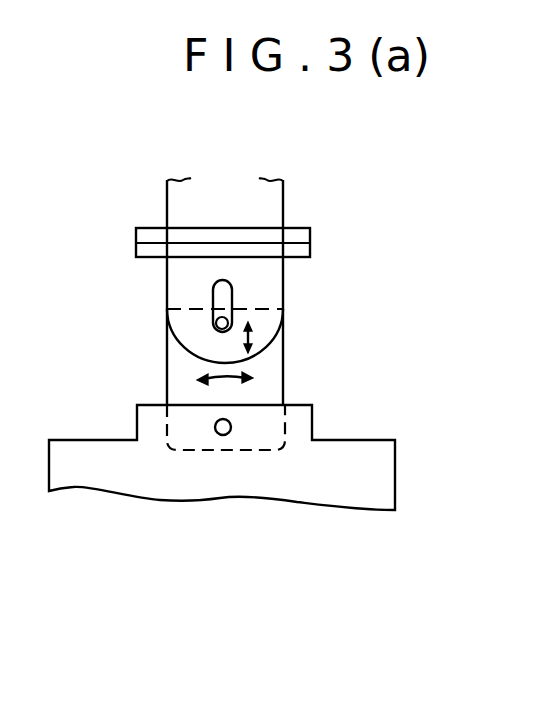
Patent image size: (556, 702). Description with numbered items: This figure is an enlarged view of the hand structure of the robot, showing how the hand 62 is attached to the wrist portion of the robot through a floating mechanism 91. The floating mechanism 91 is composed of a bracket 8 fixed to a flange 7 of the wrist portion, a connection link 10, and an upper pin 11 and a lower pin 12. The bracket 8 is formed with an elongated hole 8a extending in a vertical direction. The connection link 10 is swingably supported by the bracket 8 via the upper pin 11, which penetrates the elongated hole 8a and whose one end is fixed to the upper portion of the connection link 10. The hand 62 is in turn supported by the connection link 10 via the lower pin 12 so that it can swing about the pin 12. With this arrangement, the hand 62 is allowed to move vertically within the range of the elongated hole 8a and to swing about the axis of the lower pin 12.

The flange 7 is at (302, 237).
The bracket 8 is at (276, 273).
The elongated hole 8a is at (212, 288).
The upper pin 11 is at (217, 328).
The floating mechanism 91 is at (281, 321).
The connection link 10 is at (275, 381).
The hand 62 is at (366, 469).
The lower pin 12 is at (223, 435).